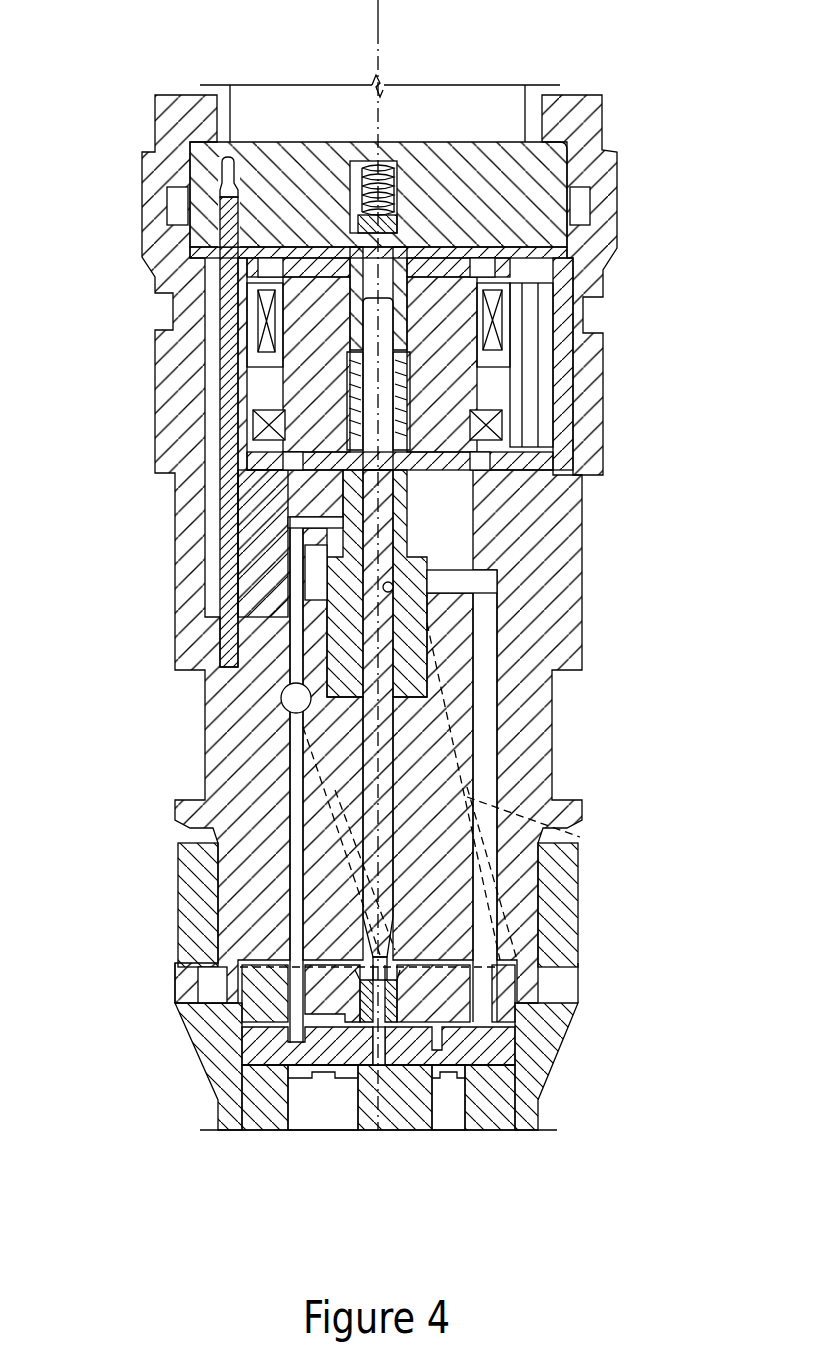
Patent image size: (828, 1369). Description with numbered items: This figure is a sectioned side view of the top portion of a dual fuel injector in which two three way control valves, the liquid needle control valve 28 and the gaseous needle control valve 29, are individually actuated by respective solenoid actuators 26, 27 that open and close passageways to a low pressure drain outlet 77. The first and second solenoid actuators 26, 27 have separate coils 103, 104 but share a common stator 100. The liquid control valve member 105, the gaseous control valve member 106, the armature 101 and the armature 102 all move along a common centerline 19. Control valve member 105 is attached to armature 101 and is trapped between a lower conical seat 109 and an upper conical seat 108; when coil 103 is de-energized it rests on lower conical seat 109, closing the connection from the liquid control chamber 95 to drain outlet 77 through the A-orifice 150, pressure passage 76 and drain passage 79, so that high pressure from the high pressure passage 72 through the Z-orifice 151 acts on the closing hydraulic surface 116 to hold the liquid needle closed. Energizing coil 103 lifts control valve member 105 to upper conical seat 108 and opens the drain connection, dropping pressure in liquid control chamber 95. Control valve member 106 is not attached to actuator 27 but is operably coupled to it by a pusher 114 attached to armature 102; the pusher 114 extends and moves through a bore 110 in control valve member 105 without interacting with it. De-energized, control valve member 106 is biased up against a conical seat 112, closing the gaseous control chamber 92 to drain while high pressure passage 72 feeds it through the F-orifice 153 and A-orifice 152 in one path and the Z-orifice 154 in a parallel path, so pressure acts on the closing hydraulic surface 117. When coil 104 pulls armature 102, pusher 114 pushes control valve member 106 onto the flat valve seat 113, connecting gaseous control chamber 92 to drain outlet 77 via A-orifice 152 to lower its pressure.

The common centerline 19 is at (378, 14).
The first solenoid actuator 26 is at (232, 462).
The second solenoid actuator 27 is at (518, 287).
The liquid needle control valve 28 is at (295, 670).
The gaseous needle control valve 29 is at (343, 975).
The high pressure passage 72 is at (300, 745).
The pressure passage 76 is at (470, 700).
The drain outlet 77 is at (210, 985).
The drain passage 79 is at (580, 840).
The gaseous control chamber 92 is at (270, 1085).
The liquid control chamber 95 is at (500, 1085).
The common stator 100 is at (265, 383).
The armature 101 is at (250, 498).
The armature 102 is at (238, 268).
The coil 103 is at (268, 420).
The coil 104 is at (255, 323).
The control valve member 105 is at (345, 527).
The control valve member 106 is at (410, 965).
The upper conical seat 108 is at (430, 572).
The lower conical seat 109 is at (420, 590).
The bore 110 is at (420, 610).
The conical seat 112 is at (375, 975).
The flat valve seat 113 is at (450, 1000).
The pusher 114 is at (385, 748).
The closing hydraulic surface 116 is at (505, 1057).
The closing hydraulic surface 117 is at (375, 1065).
The A-orifice 150 is at (450, 1055).
The Z-orifice 151 is at (435, 1075).
The A-orifice 152 is at (292, 1075).
The F-orifice 153 is at (385, 1075).
The Z-orifice 154 is at (290, 1047).